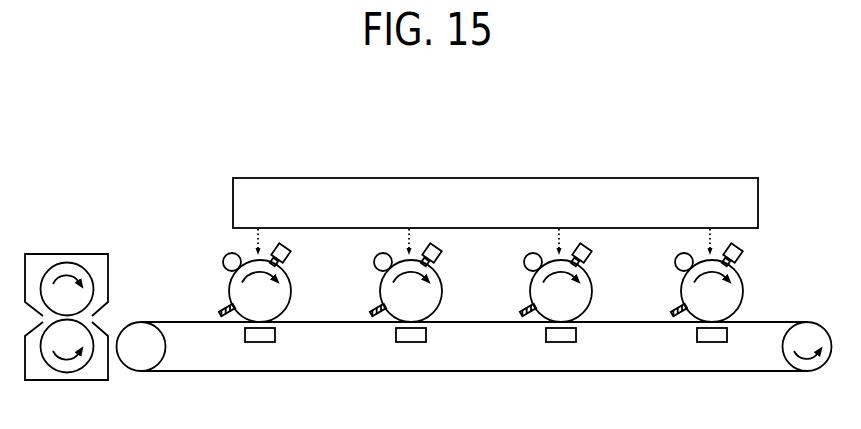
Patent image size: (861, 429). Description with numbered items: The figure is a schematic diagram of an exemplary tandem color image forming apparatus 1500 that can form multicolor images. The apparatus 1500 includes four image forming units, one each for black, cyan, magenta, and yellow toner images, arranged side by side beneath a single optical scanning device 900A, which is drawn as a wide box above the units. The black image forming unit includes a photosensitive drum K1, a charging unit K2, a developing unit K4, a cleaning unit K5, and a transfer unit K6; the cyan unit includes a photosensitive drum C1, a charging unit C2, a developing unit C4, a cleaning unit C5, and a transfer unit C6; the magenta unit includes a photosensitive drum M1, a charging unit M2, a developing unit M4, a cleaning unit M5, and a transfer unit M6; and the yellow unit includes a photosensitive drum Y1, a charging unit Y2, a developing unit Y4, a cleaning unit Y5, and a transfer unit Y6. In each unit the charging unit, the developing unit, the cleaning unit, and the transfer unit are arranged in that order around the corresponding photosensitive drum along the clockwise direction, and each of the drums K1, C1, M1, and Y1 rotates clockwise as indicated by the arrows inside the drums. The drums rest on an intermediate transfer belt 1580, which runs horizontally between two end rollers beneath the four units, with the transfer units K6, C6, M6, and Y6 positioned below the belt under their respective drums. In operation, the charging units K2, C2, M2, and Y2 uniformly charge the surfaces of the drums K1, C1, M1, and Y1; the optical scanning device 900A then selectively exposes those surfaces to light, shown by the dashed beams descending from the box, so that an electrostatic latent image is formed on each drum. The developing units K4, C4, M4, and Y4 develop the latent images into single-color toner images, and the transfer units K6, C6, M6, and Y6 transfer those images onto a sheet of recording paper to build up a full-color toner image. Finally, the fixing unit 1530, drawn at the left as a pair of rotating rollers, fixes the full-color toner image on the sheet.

The tandem color image forming apparatus 1500 is at (508, 131).
The optical scanning device 900A is at (677, 158).
The fixing unit 1530 is at (98, 240).
The intermediate transfer belt 1580 is at (511, 372).
The photosensitive drum K1 is at (292, 291).
The charging unit K2 is at (222, 264).
The developing unit K4 is at (289, 257).
The cleaning unit K5 is at (221, 310).
The transfer unit K6 is at (275, 338).
The photosensitive drum C1 is at (443, 291).
The charging unit C2 is at (373, 264).
The developing unit C4 is at (440, 257).
The cleaning unit C5 is at (372, 310).
The transfer unit C6 is at (426, 338).
The photosensitive drum M1 is at (593, 291).
The charging unit M2 is at (523, 264).
The developing unit M4 is at (590, 257).
The cleaning unit M5 is at (522, 310).
The transfer unit M6 is at (576, 338).
The photosensitive drum Y1 is at (744, 291).
The charging unit Y2 is at (674, 264).
The developing unit Y4 is at (741, 257).
The cleaning unit Y5 is at (673, 310).
The transfer unit Y6 is at (727, 338).